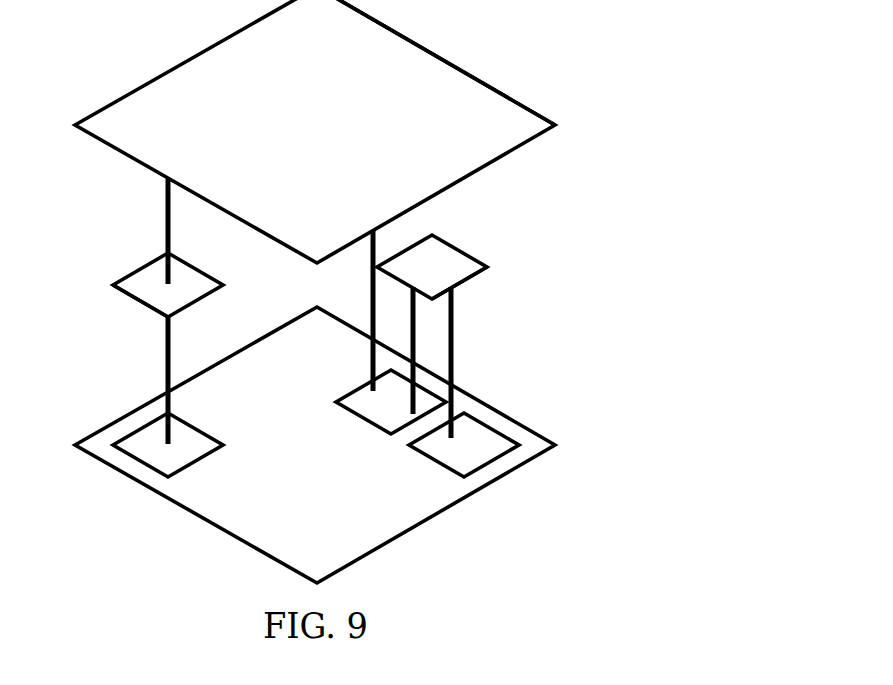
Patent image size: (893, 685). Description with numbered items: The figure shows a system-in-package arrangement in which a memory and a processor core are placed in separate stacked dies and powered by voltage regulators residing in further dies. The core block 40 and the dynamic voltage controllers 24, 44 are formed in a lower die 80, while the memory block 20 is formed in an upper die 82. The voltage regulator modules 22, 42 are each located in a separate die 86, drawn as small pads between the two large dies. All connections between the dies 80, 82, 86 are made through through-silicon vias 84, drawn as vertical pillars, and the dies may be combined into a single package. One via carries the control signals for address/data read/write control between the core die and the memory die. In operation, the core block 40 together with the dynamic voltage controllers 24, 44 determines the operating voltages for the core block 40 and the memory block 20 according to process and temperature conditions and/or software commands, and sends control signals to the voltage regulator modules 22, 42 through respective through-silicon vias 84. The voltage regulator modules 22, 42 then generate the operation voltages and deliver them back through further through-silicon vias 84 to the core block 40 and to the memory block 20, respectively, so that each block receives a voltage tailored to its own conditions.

The memory block 20 is at (198, 61).
The die 82 is at (437, 53).
The die 80 is at (430, 510).
The voltage regulator module 22 is at (145, 278).
The dynamic voltage controller 24 is at (193, 437).
The core block 40 is at (355, 397).
The voltage regulator module 42 is at (457, 258).
The dynamic voltage controller 44 is at (487, 437).
The die 86 is at (140, 305).
The through-silicon vias 84 is at (310, 316).